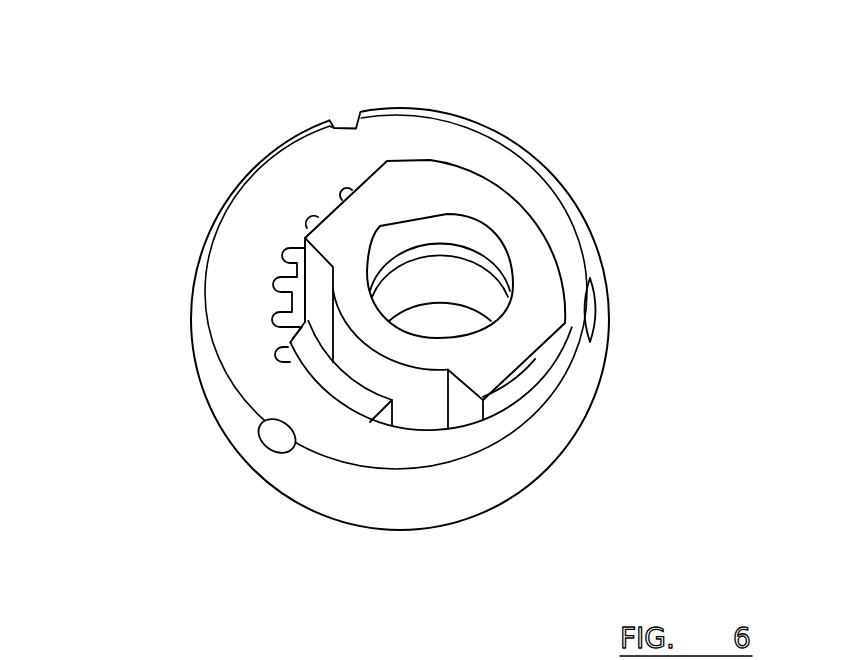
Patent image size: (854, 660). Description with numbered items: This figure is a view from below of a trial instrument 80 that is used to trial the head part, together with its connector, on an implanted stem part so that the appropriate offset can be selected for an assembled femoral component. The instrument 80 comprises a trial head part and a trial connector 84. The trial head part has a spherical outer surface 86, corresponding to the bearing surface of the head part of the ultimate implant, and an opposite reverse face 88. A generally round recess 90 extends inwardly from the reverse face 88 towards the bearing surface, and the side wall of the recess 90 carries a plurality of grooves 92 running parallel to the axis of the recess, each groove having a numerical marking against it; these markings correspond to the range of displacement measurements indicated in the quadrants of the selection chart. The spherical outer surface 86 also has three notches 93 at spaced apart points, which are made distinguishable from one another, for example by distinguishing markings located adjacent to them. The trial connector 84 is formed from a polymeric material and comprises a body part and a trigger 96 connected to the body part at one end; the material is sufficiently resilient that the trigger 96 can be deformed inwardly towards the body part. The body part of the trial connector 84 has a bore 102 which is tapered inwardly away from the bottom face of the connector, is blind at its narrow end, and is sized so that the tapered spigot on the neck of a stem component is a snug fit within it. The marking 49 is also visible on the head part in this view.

The instrument 80 is at (608, 268).
The trial connector 84 is at (543, 272).
The spherical outer surface 86 is at (222, 402).
The reverse face 88 is at (277, 187).
The recess 90 is at (422, 402).
The grooves 92 is at (281, 256).
The notches 93 is at (350, 118).
The trigger 96 is at (342, 388).
The bore 102 is at (458, 250).
The rim wall 49 is at (342, 438).